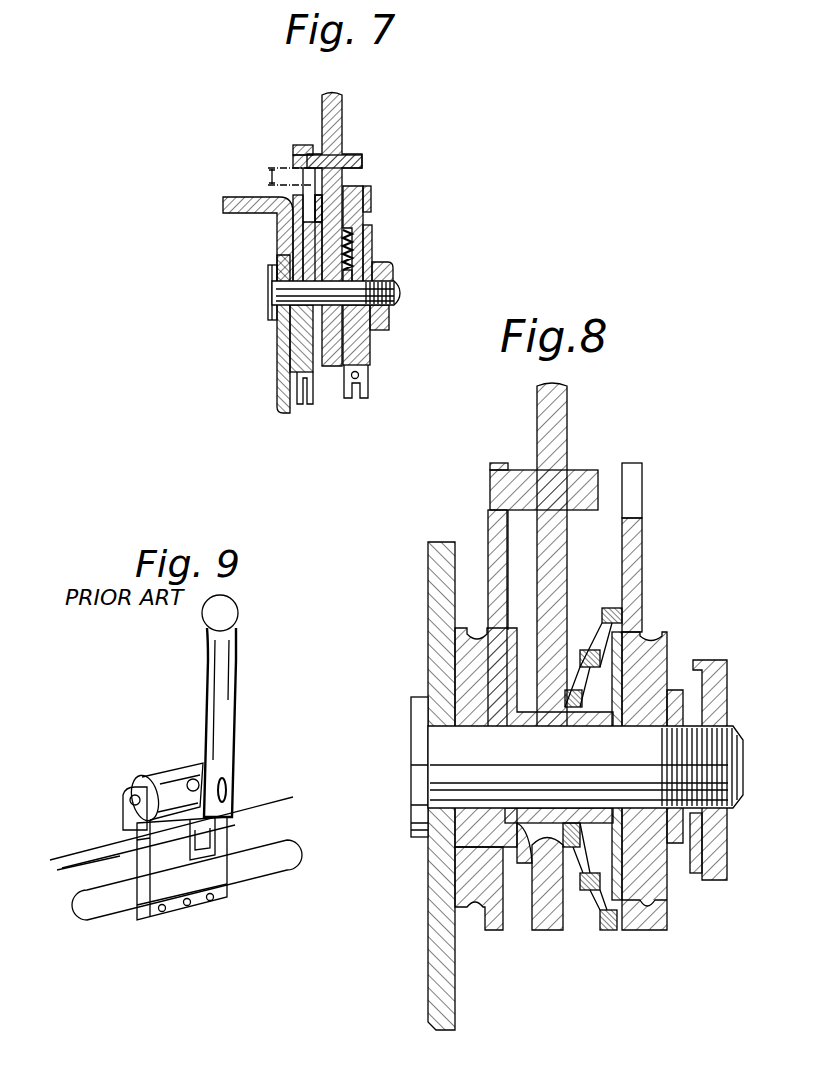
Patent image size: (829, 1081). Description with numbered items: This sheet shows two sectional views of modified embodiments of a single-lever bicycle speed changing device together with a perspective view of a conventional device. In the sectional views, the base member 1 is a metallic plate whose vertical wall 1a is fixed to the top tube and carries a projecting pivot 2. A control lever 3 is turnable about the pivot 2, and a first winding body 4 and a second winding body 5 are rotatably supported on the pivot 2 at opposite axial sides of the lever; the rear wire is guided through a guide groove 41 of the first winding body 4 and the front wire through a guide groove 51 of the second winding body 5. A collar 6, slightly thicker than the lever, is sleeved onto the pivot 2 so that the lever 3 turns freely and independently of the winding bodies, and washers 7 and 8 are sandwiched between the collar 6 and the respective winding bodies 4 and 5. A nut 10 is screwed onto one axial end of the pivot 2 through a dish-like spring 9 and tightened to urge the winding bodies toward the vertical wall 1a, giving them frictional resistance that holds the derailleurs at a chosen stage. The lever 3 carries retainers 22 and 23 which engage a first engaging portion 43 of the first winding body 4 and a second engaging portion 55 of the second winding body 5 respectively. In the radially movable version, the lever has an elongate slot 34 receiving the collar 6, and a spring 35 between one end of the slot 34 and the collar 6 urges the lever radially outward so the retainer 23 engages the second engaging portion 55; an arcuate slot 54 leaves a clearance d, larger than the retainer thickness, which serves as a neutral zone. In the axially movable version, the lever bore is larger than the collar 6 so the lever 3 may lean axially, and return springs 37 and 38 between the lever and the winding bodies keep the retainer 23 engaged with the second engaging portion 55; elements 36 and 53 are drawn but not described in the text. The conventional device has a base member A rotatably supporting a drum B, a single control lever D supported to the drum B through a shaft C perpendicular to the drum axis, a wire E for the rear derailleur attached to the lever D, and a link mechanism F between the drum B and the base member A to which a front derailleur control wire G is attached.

In FIG. 7, the base member 1 is at (270, 360).
In FIG. 8, the base member 1 is at (430, 600).
In FIG. 7, the vertical wall 1a is at (283, 375).
In FIG. 7, the pivot 2 is at (401, 292).
In FIG. 8, the pivot 2 is at (740, 780).
In FIG. 7, the control lever 3 is at (345, 112).
In FIG. 8, the control lever 3 is at (570, 405).
In FIG. 7, the first winding body 4 is at (360, 215).
In FIG. 8, the first winding body 4 is at (641, 536).
In FIG. 7, the second winding body 5 is at (296, 234).
In FIG. 8, the second winding body 5 is at (490, 530).
In FIG. 7, the collar 6 is at (373, 250).
In FIG. 8, the collar 6 is at (666, 675).
In FIG. 7, the washer 7 is at (352, 242).
In FIG. 8, the washer 7 is at (640, 645).
In FIG. 7, the washer 8 is at (310, 256).
In FIG. 8, the washer 8 is at (466, 662).
In FIG. 7, the dish-like spring 9 is at (394, 268).
In FIG. 8, the dish-like spring 9 is at (726, 682).
In FIG. 7, the nut 10 is at (392, 318).
In FIG. 8, the nut 10 is at (727, 712).
In FIG. 7, the retainer 22 is at (364, 158).
In FIG. 8, the retainer 22 is at (585, 475).
In FIG. 7, the retainer 23 is at (306, 150).
In FIG. 8, the retainer 23 is at (520, 480).
In FIG. 7, the elongate slot 34 is at (371, 192).
In FIG. 7, the spring 35 is at (270, 276).
In FIG. 8, the lug 36 is at (548, 880).
In FIG. 8, the return spring 37 is at (620, 612).
In FIG. 8, the return spring 38 is at (456, 710).
In FIG. 7, the guide groove 41 is at (360, 400).
In FIG. 8, the guide groove 41 is at (646, 906).
In FIG. 8, the first engaging portion 43 is at (640, 482).
In FIG. 7, the guide groove 51 is at (301, 404).
In FIG. 8, the guide groove 51 is at (475, 908).
In FIG. 7, the collar 53 is at (300, 145).
In FIG. 7, the arcuate slot 54 is at (320, 172).
In FIG. 7, the second engaging portion 55 is at (296, 168).
In FIG. 8, the second engaging portion 55 is at (491, 464).
In FIG. 7, the clearance d is at (270, 177).
In FIG. 9, the base member A is at (128, 796).
In FIG. 9, the drum B is at (178, 770).
In FIG. 9, the shaft C is at (193, 779).
In FIG. 9, the control lever D is at (238, 670).
In FIG. 9, the wire E is at (100, 848).
In FIG. 9, the link mechanism F is at (178, 823).
In FIG. 9, the control wire G is at (70, 857).